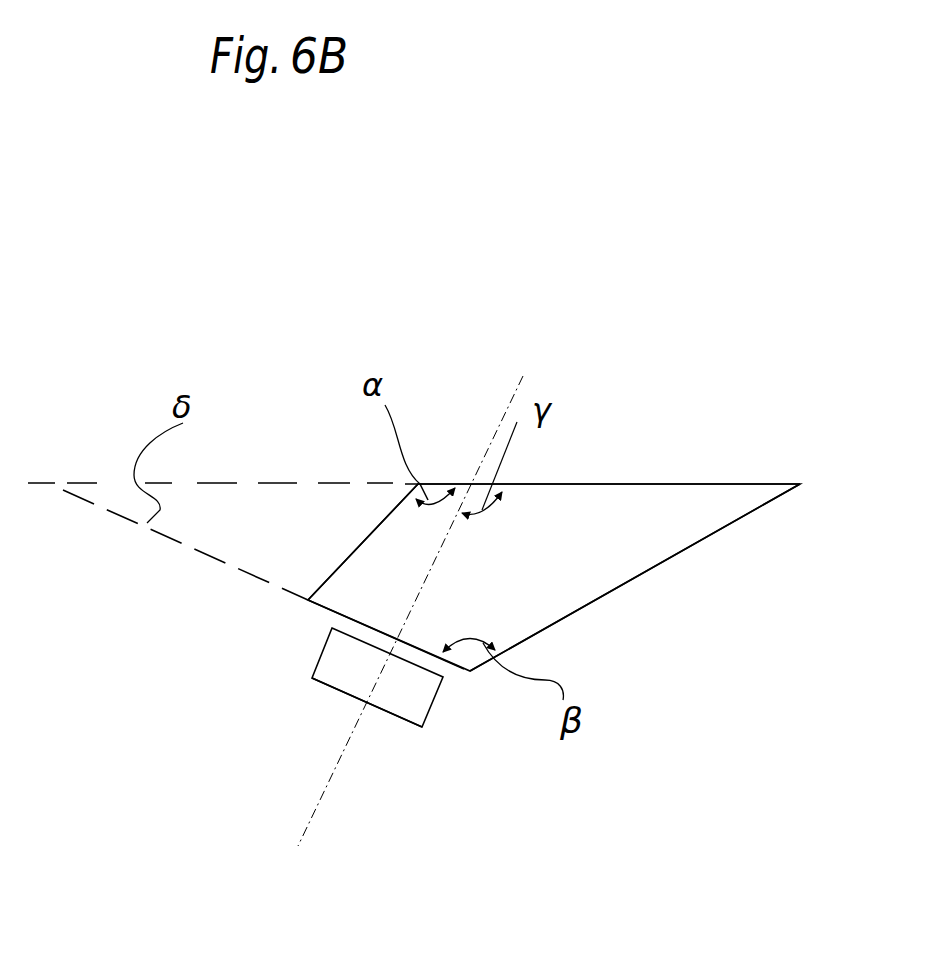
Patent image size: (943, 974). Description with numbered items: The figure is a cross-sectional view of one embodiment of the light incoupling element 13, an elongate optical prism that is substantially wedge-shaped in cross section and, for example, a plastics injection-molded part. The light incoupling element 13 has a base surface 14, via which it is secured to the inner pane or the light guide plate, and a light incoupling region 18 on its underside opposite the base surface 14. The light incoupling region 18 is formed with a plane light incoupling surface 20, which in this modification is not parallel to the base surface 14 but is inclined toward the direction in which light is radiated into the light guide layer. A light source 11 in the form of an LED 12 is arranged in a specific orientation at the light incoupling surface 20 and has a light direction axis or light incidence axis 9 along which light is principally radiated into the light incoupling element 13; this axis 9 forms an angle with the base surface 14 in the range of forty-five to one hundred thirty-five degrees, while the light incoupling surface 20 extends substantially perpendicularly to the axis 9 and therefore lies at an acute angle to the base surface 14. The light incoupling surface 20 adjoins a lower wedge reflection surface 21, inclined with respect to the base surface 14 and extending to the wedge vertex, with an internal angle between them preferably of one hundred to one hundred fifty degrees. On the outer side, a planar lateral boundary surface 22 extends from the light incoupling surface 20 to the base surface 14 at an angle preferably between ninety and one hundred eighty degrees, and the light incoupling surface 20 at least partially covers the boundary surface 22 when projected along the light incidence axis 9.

The optical axis 9 is at (315, 806).
The light source 11 is at (312, 650).
The LED 12 is at (330, 687).
The light incoupling element 13 is at (667, 540).
The base surface 14 is at (595, 483).
The light incoupling region 18 is at (316, 571).
The light incoupling surface 20 is at (457, 671).
The wedge reflection surface 21 is at (613, 590).
The lateral boundary surface 22 is at (377, 528).